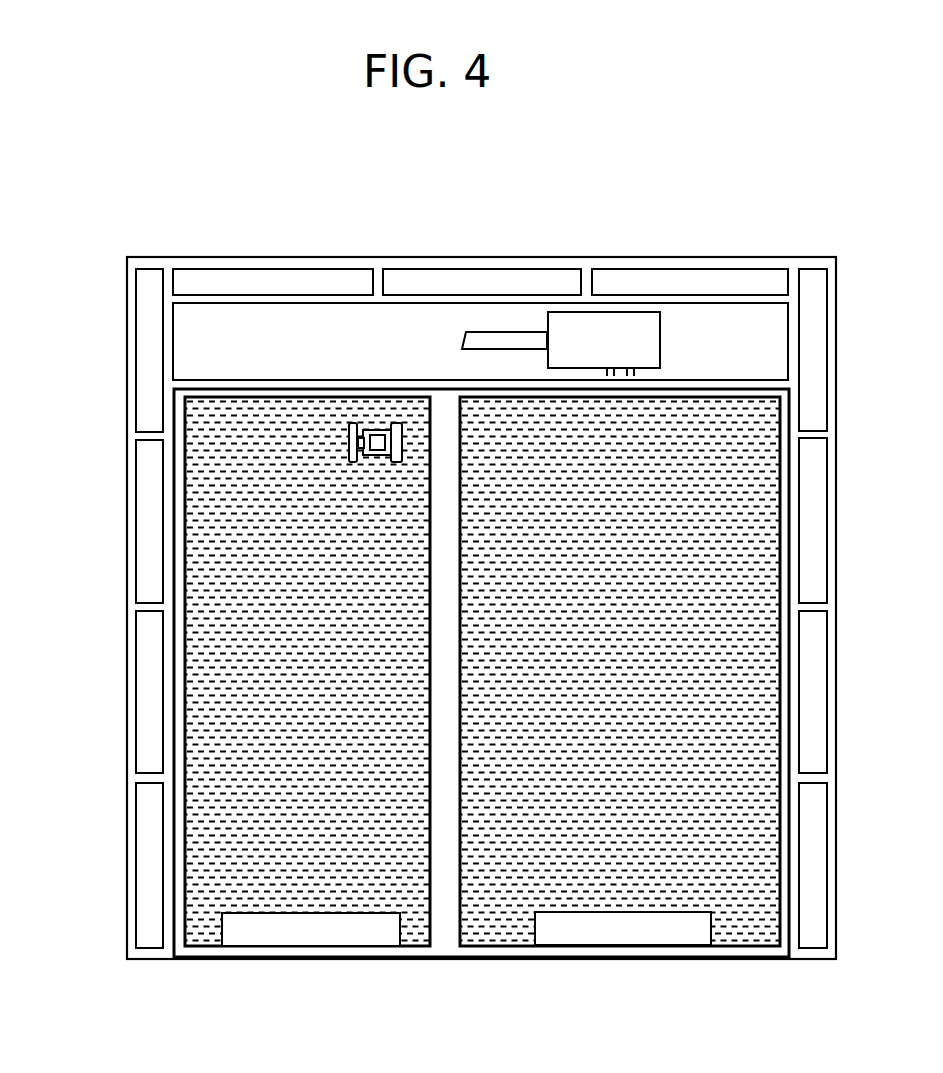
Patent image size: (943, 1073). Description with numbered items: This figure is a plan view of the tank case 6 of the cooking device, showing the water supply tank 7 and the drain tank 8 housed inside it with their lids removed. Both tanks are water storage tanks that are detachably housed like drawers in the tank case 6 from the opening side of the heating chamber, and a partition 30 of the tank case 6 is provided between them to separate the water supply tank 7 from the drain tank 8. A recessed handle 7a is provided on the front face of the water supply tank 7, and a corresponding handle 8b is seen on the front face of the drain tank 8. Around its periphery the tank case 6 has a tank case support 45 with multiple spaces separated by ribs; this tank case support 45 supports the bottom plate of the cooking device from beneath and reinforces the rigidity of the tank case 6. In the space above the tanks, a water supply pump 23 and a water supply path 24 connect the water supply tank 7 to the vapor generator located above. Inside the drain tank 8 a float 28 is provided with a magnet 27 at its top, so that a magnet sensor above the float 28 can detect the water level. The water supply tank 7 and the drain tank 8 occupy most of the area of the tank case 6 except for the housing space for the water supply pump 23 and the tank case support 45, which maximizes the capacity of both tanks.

The tank case 6 is at (358, 215).
The water supply tank 7 is at (668, 918).
The recessed handle 7a is at (570, 930).
The drain tank 8 is at (267, 918).
The door panel lower guide 8b is at (353, 930).
The water supply pump 23 is at (620, 335).
The water supply path 24 is at (483, 338).
The magnet 27 is at (350, 440).
The float 28 is at (350, 452).
The partition 30 is at (445, 930).
The tank case support 45 is at (150, 835).